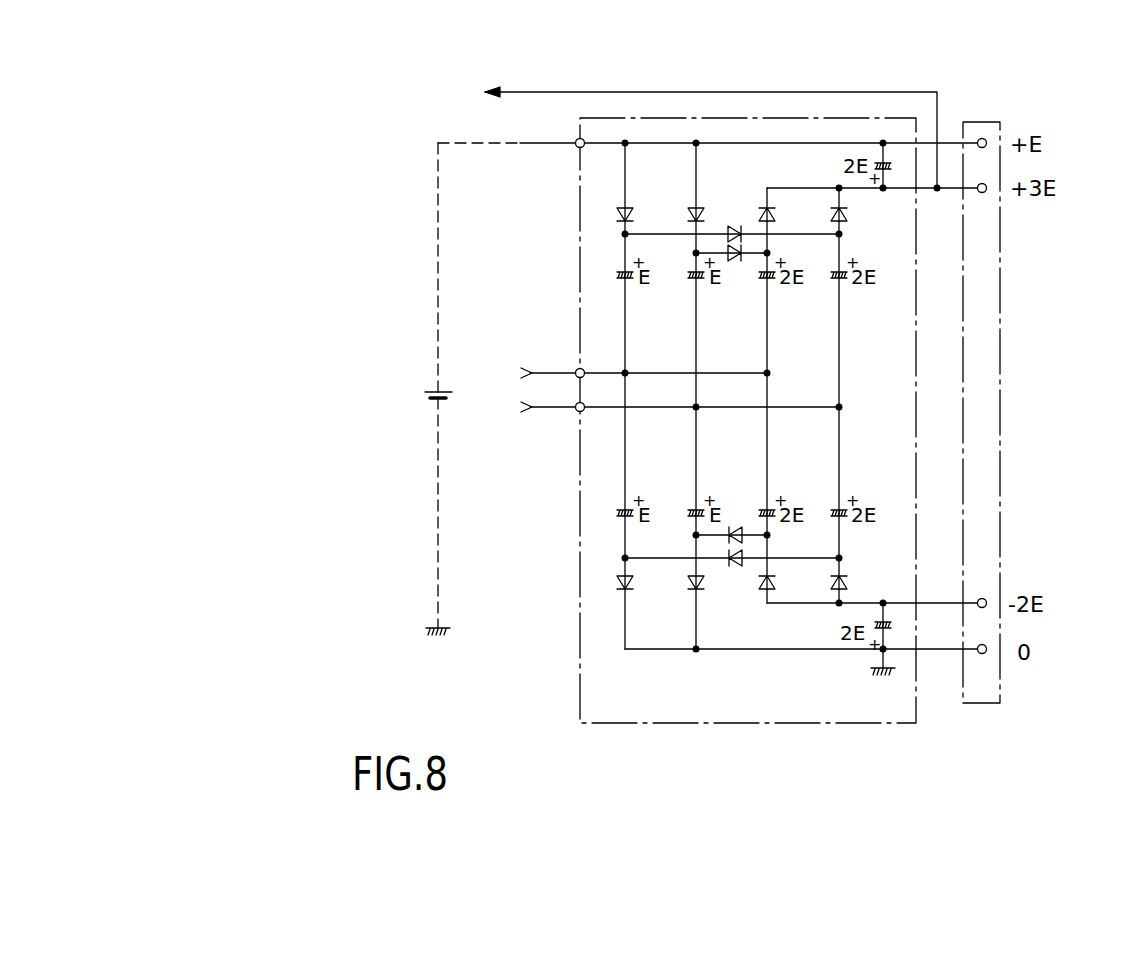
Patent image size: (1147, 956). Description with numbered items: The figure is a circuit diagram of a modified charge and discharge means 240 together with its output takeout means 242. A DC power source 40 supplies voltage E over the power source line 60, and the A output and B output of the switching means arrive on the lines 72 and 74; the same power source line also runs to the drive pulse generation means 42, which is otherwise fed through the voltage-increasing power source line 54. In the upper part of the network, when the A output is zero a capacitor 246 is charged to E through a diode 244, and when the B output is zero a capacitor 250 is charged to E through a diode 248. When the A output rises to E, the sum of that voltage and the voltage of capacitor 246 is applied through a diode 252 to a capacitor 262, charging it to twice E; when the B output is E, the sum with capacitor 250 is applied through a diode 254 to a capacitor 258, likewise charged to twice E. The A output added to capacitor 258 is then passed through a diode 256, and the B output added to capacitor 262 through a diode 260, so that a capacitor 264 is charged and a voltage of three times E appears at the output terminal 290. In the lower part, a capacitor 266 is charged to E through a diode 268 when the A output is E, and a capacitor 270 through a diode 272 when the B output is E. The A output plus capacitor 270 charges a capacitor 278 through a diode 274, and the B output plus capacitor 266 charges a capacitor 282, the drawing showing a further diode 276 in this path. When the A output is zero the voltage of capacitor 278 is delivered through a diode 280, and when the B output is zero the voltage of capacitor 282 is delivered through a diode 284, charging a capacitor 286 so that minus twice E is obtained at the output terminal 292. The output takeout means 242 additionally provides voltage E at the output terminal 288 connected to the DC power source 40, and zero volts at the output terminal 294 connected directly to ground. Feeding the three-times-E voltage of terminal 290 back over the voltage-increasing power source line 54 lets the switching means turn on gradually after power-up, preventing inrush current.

The DC power source 40 is at (430, 390).
The drive pulse generation means 42 is at (336, 99).
The voltage-increasing power source line 54 is at (648, 91).
The power source line 60 is at (553, 142).
The line for A output 72 is at (548, 372).
The line for B output 74 is at (548, 410).
The charge and discharge means 240 is at (693, 724).
The output takeout means 242 is at (972, 705).
The diode 244 is at (629, 211).
The capacitor 246 is at (629, 281).
The diode 248 is at (700, 211).
The capacitor 250 is at (693, 283).
The diode 252 is at (735, 227).
The diode 254 is at (733, 262).
The diode 256 is at (773, 215).
The capacitor 258 is at (771, 282).
The diode 260 is at (846, 215).
The capacitor 262 is at (844, 282).
The capacitor 264 is at (888, 162).
The capacitor 266 is at (619, 510).
The diode 268 is at (621, 585).
The capacitor 270 is at (691, 510).
The diode 272 is at (692, 585).
The diode 274 is at (734, 527).
The diode 276 is at (734, 567).
The capacitor 278 is at (771, 510).
The diode 280 is at (773, 583).
The capacitor 282 is at (844, 510).
The diode 284 is at (846, 583).
The capacitor 286 is at (889, 620).
The output terminal 288 is at (984, 138).
The output terminal 290 is at (986, 193).
The output terminal 292 is at (986, 600).
The output terminal 294 is at (986, 653).